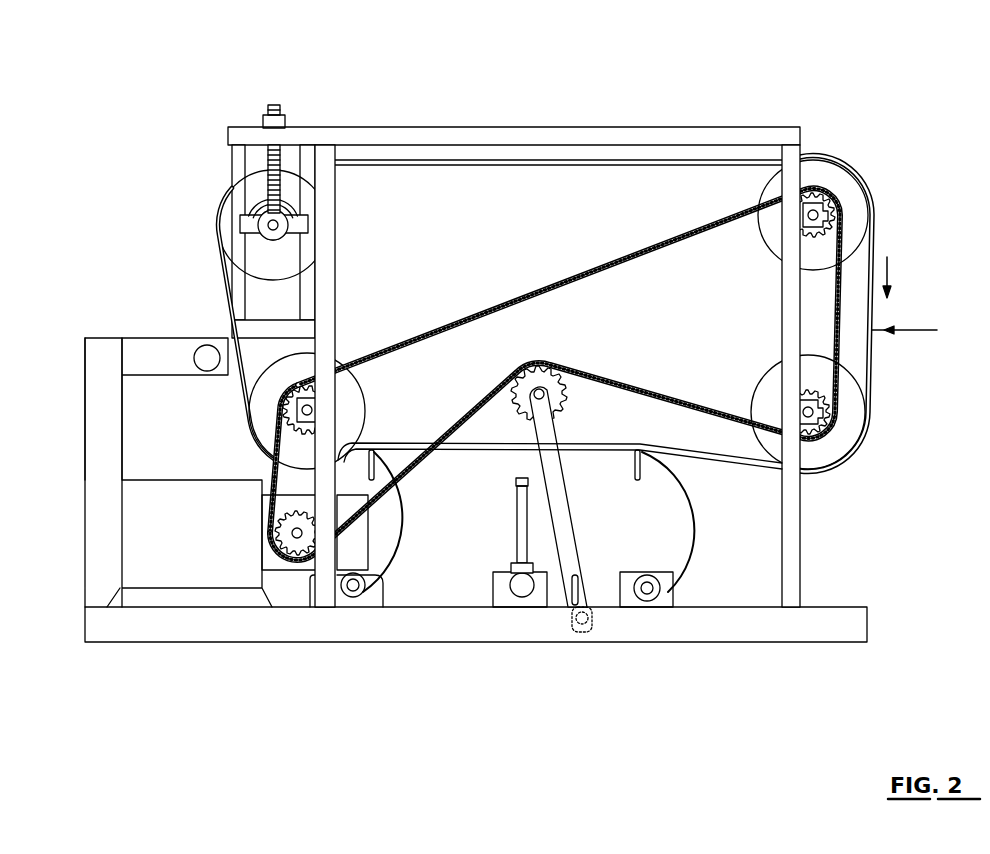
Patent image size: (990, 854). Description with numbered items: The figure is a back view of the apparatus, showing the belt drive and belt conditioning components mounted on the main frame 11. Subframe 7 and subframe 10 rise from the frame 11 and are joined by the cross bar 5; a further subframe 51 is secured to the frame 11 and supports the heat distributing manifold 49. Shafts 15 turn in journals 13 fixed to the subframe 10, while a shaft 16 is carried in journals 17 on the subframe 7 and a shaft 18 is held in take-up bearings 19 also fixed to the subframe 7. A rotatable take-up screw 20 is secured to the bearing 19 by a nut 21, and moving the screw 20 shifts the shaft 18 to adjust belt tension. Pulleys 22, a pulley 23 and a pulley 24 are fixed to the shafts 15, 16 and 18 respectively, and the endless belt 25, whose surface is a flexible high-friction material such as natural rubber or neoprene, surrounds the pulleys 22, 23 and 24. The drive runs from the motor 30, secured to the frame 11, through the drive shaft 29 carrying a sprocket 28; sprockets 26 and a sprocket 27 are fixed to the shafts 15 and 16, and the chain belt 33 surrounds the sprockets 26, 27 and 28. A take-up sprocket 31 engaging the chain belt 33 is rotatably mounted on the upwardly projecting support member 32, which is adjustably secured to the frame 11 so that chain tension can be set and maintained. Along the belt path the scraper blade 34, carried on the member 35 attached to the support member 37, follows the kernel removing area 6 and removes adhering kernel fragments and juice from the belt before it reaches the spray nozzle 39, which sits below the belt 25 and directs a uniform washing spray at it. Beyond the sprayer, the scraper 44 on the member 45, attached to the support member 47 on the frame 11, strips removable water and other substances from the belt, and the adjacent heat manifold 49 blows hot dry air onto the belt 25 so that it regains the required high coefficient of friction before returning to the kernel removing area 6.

The cross bar 5 is at (566, 137).
The kernel removing area 6 is at (915, 300).
The subframe 7 is at (325, 135).
The subframe 10 is at (795, 150).
The main frame 11 is at (615, 630).
The journal 13 is at (805, 392).
The shaft 15 is at (823, 220).
The shaft 16 is at (312, 406).
The journal 17 is at (318, 416).
The shaft 18 is at (273, 232).
The take-up bearing 19 is at (245, 225).
The take-up screw 20 is at (267, 157).
The nut 21 is at (285, 123).
The pulley 22 is at (840, 178).
The pulley 23 is at (272, 382).
The pulley 24 is at (222, 200).
The endless belt 25 is at (598, 167).
The sprocket 26 is at (828, 213).
The sprocket 27 is at (270, 400).
The sprocket 28 is at (282, 540).
The drive shaft 29 is at (297, 540).
The motor 30 is at (135, 548).
The take-up sprocket 31 is at (522, 406).
The support member 32 is at (565, 540).
The chain belt 33 is at (405, 483).
The scraper blade 34 is at (645, 455).
The member 35 is at (696, 535).
The support member 37 is at (675, 598).
The spray nozzle 39 is at (516, 525).
The scraper 44 is at (376, 455).
The member 45 is at (403, 560).
The support member 47 is at (353, 597).
The heat distributing manifold 49 is at (205, 348).
The subframe 51 is at (90, 377).